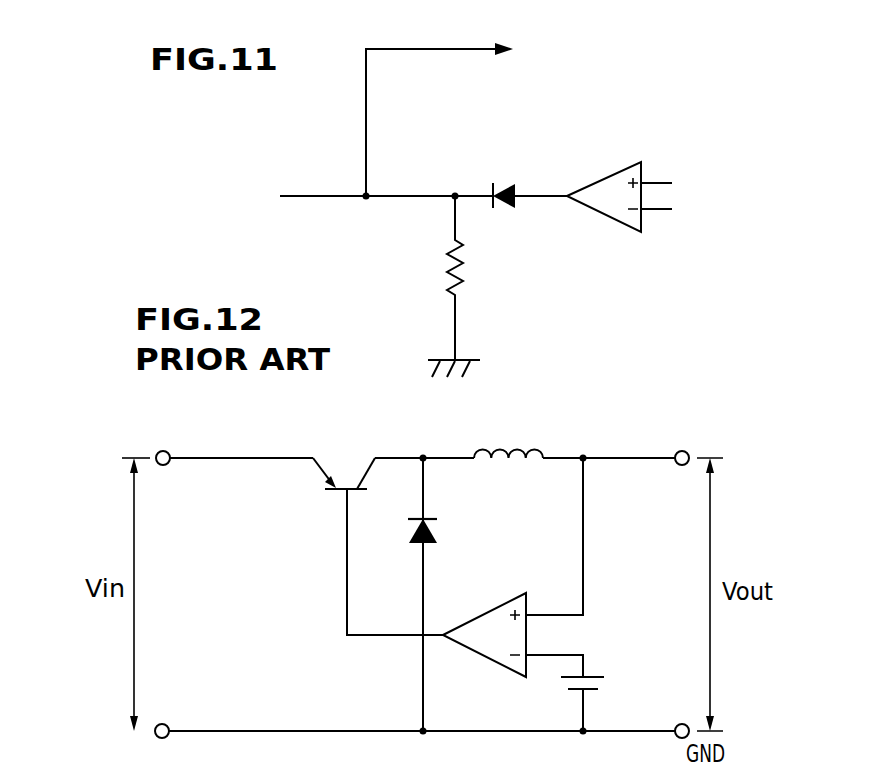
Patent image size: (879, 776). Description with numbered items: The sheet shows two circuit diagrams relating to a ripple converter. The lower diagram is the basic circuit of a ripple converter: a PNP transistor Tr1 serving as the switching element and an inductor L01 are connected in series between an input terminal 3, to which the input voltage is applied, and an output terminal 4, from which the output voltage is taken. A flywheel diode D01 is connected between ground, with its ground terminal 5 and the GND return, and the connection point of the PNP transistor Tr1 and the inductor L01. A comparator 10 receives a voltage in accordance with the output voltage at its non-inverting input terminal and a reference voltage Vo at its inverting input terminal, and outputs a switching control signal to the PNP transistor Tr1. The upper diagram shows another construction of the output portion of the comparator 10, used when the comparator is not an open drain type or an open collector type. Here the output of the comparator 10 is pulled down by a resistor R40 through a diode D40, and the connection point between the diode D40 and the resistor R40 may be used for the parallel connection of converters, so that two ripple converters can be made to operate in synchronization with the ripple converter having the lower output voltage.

In FIG. 11, the comparator 10 is at (598, 213).
In FIG. 12, the comparator 10 is at (494, 596).
In FIG. 12, the input terminal 3 is at (160, 451).
In FIG. 12, the output terminal 4 is at (680, 451).
In FIG. 12, the ground terminal 5 is at (159, 739).
In FIG. 11, the diode D40 is at (507, 180).
In FIG. 11, the resistor R40 is at (467, 286).
In FIG. 12, the PNP transistor Tr1 is at (370, 546).
In FIG. 12, the flywheel diode D01 is at (406, 594).
In FIG. 12, the inductor L01 is at (508, 440).
In FIG. 12, the reference voltage Vo is at (599, 700).
In FIG. 12, the ground terminal GND is at (682, 731).